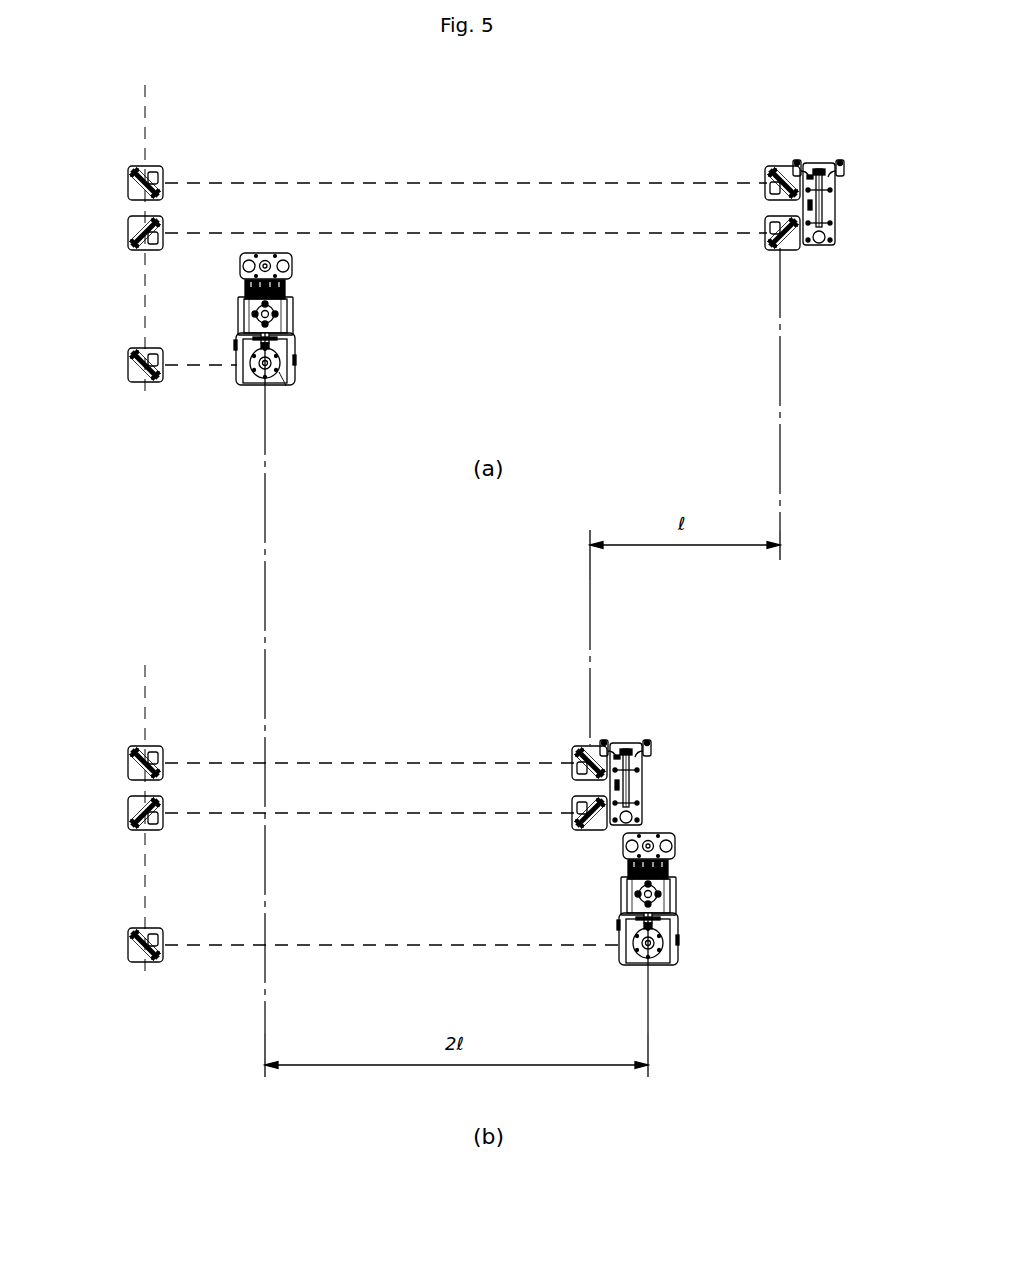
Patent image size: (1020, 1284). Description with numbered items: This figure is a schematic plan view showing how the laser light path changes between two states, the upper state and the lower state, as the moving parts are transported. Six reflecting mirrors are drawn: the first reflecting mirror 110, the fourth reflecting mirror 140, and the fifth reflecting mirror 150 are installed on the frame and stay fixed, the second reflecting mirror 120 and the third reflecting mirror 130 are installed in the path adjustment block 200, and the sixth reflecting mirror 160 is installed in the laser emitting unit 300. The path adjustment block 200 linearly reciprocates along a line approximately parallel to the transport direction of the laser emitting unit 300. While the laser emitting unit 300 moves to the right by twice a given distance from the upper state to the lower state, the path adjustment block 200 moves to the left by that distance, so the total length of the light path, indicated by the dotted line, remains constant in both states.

The first reflecting mirror 110 is at (131, 187).
The fourth reflecting mirror 140 is at (130, 222).
The fifth reflecting mirror 150 is at (136, 369).
The sixth reflecting mirror 160 is at (285, 386).
The second reflecting mirror 120 is at (772, 168).
The third reflecting mirror 130 is at (768, 234).
The path adjustment block 200 is at (830, 202).
The laser emitting unit 300 is at (292, 309).